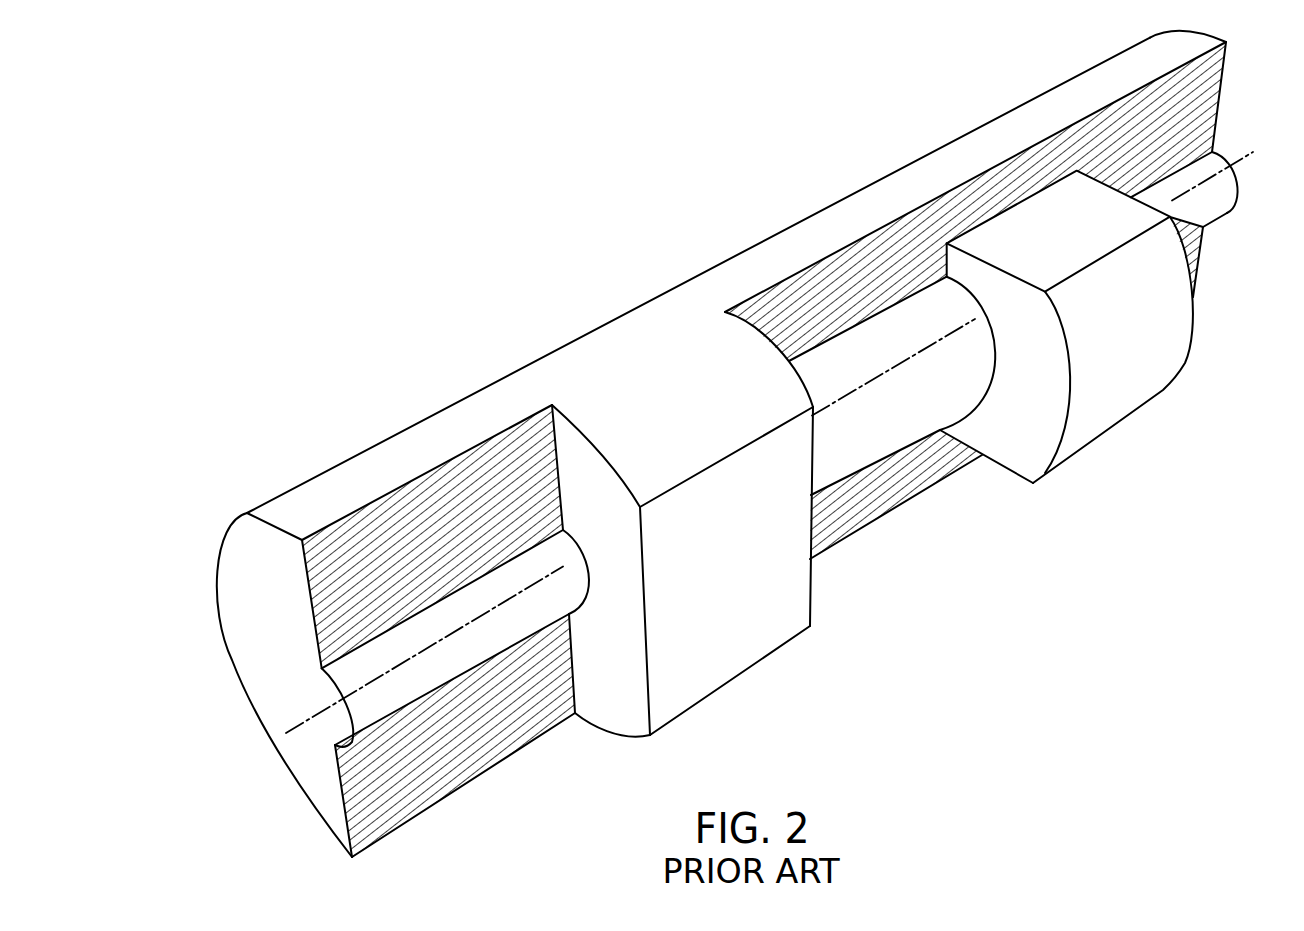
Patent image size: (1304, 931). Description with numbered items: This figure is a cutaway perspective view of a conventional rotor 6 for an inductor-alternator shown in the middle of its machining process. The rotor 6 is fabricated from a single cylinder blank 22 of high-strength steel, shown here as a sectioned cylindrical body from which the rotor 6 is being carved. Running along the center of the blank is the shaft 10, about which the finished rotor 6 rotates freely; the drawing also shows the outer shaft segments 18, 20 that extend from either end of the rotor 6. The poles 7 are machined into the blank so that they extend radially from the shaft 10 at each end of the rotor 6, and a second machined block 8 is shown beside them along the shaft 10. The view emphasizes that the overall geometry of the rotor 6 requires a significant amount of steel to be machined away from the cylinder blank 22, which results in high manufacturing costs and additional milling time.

The rotor 6 is at (751, 444).
The poles 7 is at (1116, 406).
The first bearing block 8 is at (732, 657).
The shaft 10 is at (1230, 150).
The outer shaft segment 18 is at (1212, 206).
The outer shaft segment 20 is at (363, 717).
The cylinder blank 22 is at (396, 446).